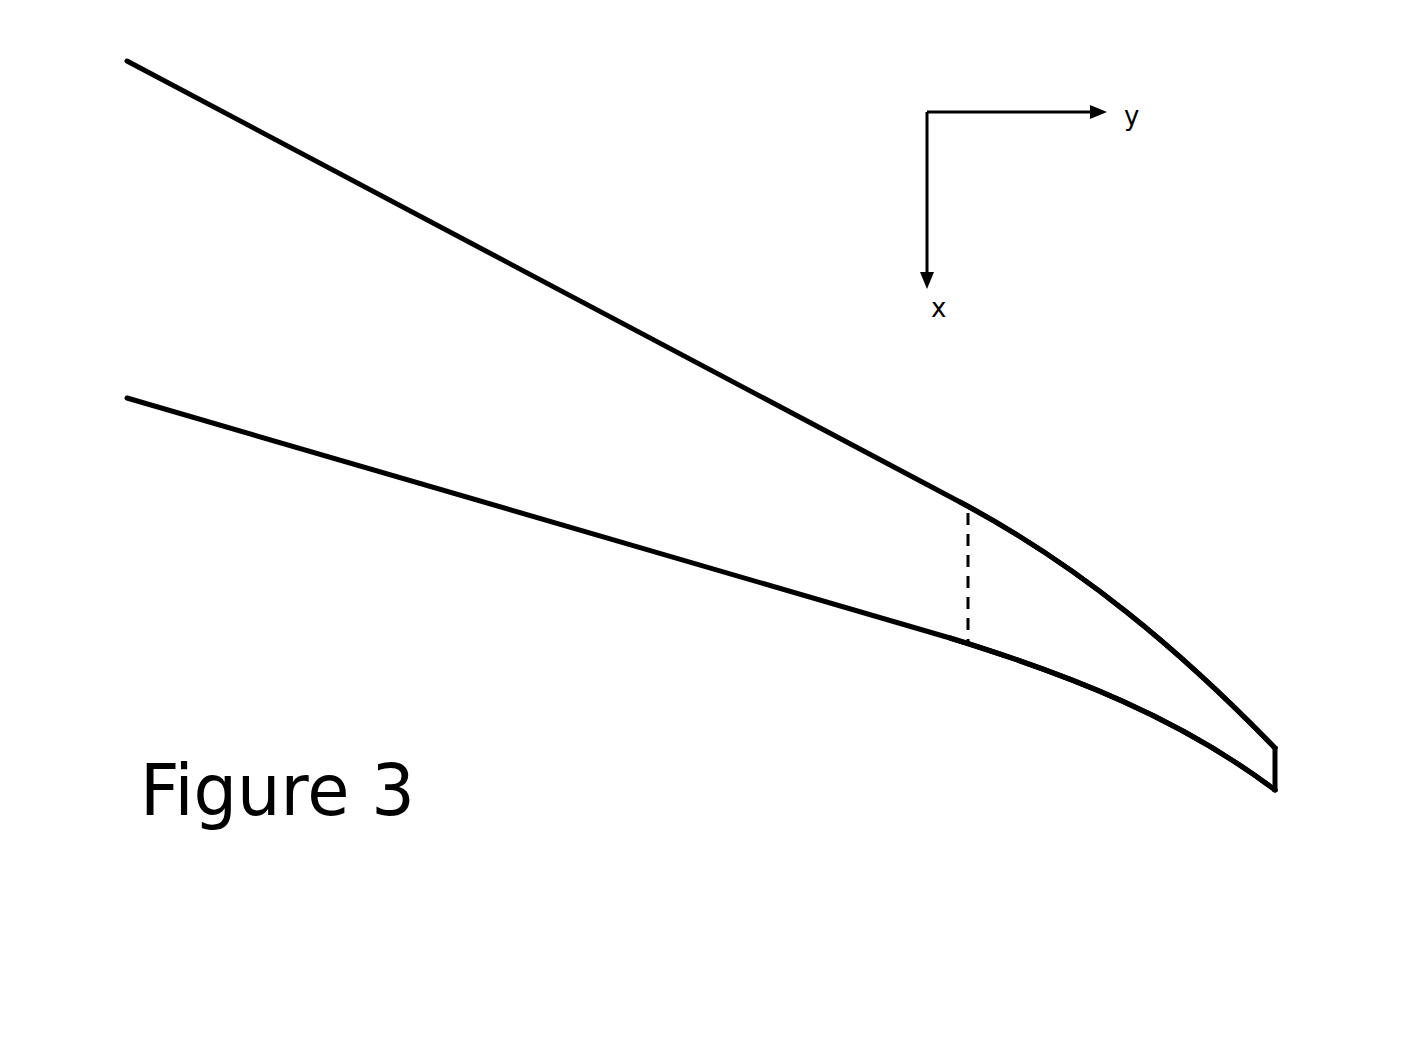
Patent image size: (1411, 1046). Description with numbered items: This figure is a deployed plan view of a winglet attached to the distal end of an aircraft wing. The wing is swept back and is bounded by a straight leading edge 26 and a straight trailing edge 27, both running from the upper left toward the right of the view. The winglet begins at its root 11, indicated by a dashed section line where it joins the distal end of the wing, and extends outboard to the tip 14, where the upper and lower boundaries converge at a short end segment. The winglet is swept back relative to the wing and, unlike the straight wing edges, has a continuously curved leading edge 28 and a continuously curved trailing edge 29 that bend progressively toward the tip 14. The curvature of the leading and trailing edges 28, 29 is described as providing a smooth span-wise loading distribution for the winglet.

The root 11 is at (968, 590).
The tip 14 is at (1277, 770).
The leading edge 26 is at (543, 275).
The trailing edge 27 is at (527, 515).
The leading edge 28 is at (1107, 587).
The trailing edge 29 is at (1062, 680).